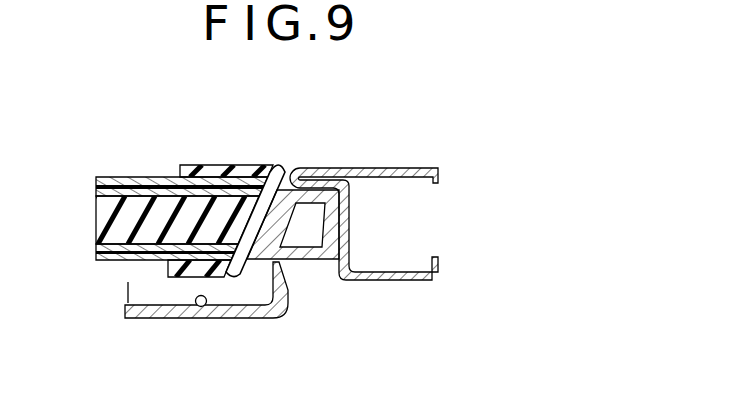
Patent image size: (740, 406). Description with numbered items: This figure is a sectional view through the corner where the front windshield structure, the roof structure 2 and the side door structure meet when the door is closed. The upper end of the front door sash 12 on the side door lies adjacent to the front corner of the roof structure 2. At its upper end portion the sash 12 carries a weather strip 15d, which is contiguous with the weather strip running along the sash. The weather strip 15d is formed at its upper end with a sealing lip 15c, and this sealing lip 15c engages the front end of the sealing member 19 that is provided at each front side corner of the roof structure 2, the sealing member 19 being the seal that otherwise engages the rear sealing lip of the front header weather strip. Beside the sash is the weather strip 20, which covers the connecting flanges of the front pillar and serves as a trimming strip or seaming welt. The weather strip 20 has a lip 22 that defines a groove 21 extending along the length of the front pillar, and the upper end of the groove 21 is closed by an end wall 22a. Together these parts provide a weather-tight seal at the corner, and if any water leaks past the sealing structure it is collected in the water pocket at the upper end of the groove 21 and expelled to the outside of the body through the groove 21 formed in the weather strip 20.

The roof structure 2 is at (379, 168).
The front door sash 12 is at (151, 177).
The sealing lip 15c is at (280, 186).
The weather strip 15d is at (244, 165).
The sealing member 19 is at (327, 301).
The weather strip 20 is at (150, 330).
The groove 21 is at (201, 307).
The lip 22 is at (244, 320).
The end wall 22a is at (283, 291).